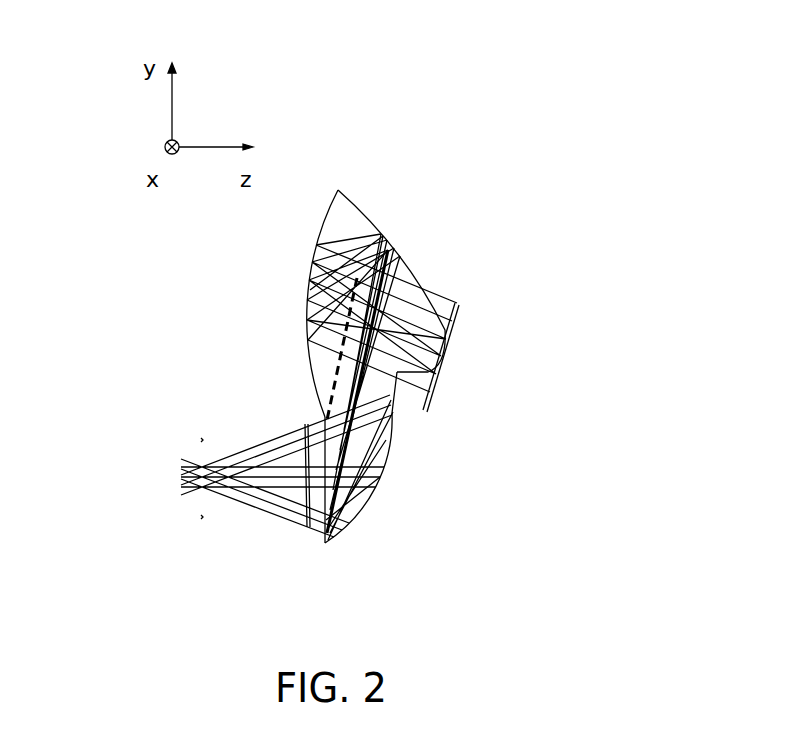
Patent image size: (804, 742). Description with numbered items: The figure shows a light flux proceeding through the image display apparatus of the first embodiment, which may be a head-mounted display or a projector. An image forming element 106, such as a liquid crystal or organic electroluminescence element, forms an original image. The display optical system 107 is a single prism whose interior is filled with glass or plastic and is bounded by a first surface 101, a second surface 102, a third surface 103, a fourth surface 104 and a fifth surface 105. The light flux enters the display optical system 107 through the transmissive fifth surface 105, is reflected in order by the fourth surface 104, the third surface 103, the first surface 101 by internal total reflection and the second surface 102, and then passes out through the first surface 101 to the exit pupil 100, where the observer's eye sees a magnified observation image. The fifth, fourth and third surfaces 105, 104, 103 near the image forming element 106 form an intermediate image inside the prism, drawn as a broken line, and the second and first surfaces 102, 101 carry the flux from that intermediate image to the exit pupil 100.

The exit pupil 100 is at (194, 430).
The first surface 101 is at (314, 543).
The second surface 102 is at (372, 504).
The third surface 103 is at (378, 211).
The fourth surface 104 is at (301, 302).
The fifth surface 105 is at (448, 316).
The image forming element 106 is at (444, 370).
The display optical system 107 is at (379, 451).